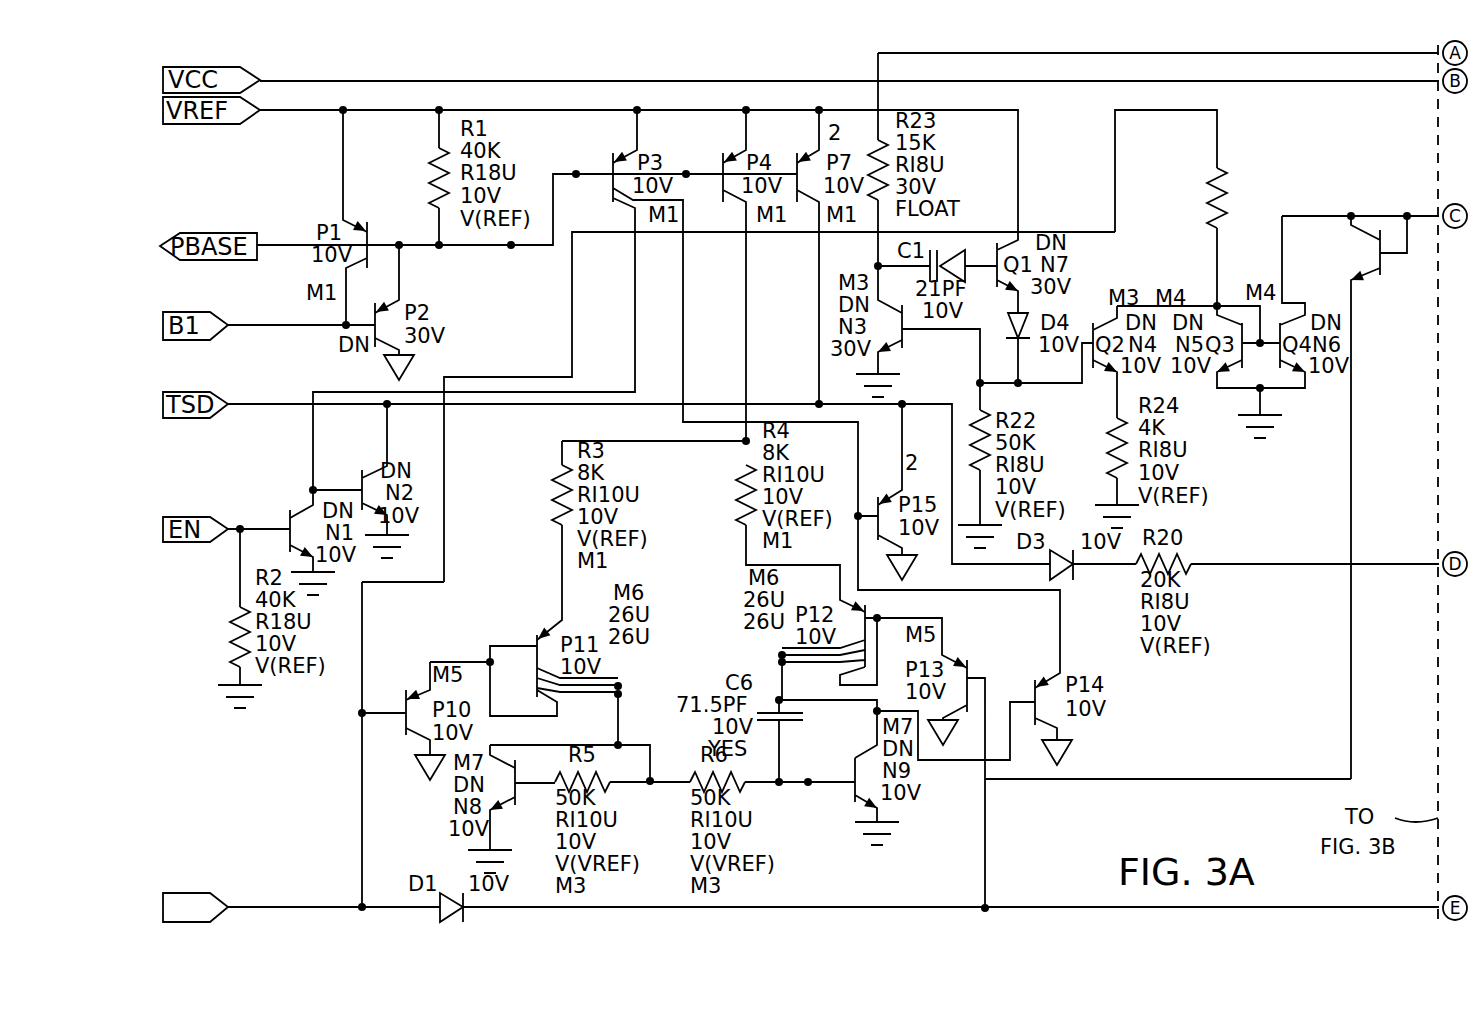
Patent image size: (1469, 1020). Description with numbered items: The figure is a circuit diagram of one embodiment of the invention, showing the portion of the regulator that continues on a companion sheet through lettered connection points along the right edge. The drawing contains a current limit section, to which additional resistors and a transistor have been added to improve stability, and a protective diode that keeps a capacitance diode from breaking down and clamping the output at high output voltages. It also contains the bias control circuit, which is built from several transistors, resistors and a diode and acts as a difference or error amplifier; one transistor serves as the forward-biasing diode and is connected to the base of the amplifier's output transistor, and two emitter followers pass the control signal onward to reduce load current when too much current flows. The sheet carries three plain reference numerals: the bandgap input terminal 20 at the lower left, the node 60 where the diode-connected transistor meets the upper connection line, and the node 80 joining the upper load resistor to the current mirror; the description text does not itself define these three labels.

The band gap voltage input VBG 20 is at (190, 893).
The output node to FIG. 3B 60 is at (1407, 216).
The circuit node 80 is at (1217, 306).